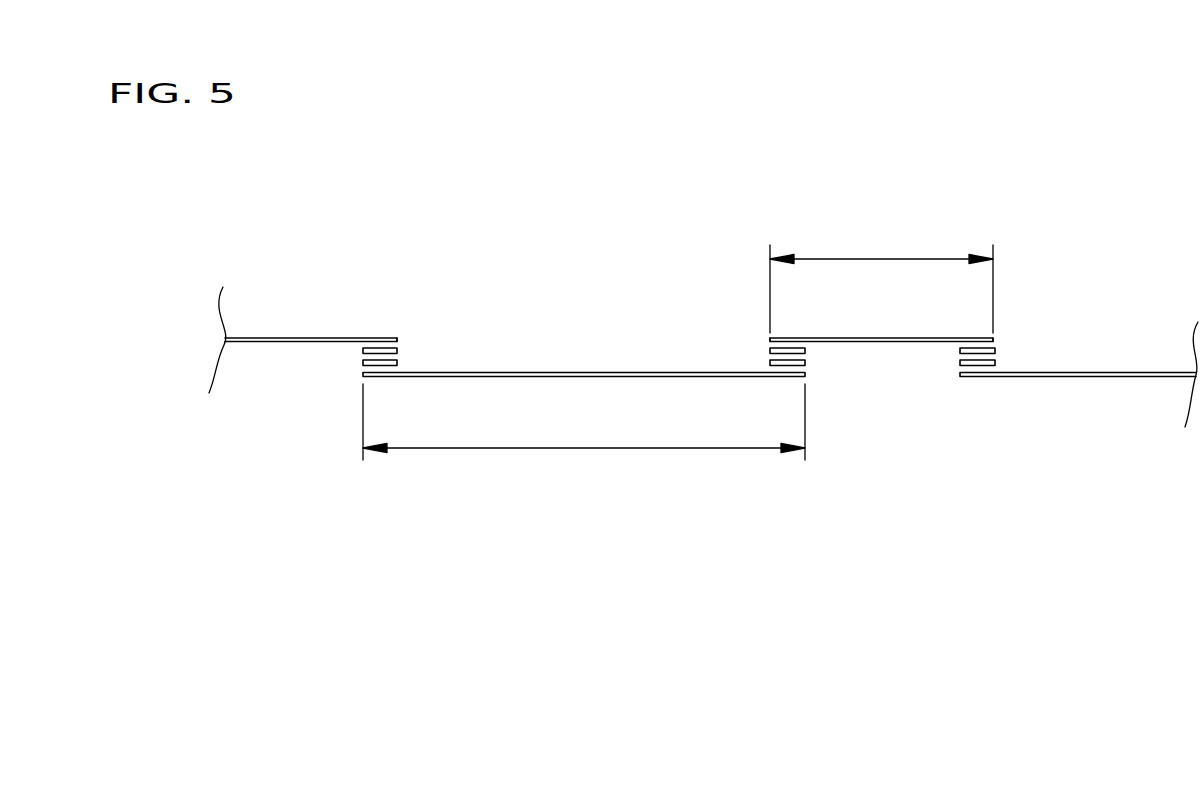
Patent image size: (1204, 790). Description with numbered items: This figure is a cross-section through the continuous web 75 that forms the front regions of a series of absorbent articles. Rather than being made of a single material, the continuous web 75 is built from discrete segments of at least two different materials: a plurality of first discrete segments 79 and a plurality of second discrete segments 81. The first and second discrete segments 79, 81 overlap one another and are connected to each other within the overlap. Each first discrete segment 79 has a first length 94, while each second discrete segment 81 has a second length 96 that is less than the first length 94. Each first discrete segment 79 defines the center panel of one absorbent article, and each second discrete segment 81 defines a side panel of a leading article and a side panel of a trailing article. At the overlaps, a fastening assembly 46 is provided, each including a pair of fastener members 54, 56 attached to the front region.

The continuous web 75 is at (1048, 232).
The second discrete segment 81 is at (288, 337).
The first discrete segment 79 is at (543, 371).
The fastener member 54 is at (398, 349).
The fastener member 56 is at (362, 362).
The fastening assembly 46 is at (402, 336).
The second length 96 is at (882, 258).
The first length 94 is at (585, 447).